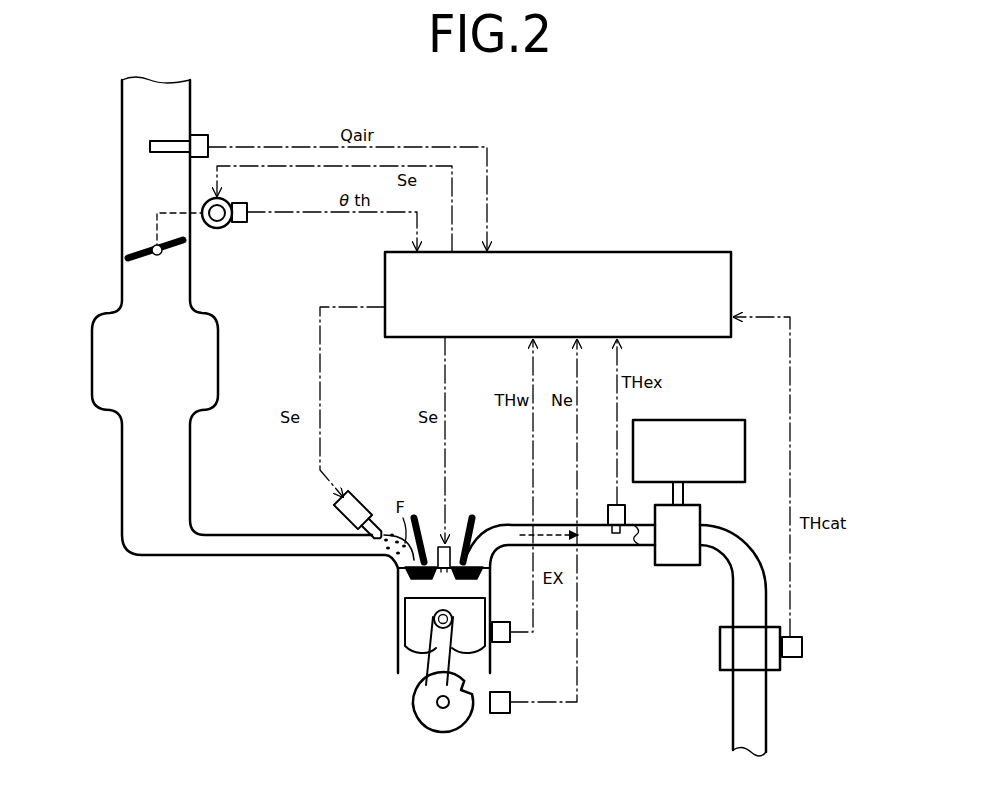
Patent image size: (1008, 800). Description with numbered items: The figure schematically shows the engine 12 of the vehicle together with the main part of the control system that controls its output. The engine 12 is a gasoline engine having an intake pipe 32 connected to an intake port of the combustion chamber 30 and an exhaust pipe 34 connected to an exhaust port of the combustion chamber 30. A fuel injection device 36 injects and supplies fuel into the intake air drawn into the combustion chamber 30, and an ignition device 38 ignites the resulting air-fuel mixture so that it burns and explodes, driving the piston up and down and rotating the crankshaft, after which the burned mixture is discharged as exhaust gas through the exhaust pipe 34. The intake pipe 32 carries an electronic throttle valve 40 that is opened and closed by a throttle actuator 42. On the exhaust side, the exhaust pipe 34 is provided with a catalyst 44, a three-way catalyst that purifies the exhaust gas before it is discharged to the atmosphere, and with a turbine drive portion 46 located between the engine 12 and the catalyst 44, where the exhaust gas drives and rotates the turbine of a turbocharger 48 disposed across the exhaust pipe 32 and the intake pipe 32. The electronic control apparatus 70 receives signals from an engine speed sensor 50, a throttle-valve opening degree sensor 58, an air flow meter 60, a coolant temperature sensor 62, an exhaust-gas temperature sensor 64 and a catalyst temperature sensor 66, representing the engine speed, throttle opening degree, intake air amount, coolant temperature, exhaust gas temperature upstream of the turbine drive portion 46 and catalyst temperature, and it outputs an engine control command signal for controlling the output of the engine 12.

The engine 12 is at (400, 450).
The combustion chamber 30 is at (398, 588).
The intake pipe 32 is at (275, 535).
The exhaust pipe 34 is at (512, 522).
The fuel injection device 36 is at (362, 500).
The ignition device 38 is at (452, 545).
The electronic throttle valve 40 is at (142, 252).
The throttle actuator 42 is at (227, 224).
The catalyst 44 is at (726, 645).
The turbine drive portion 46 is at (676, 558).
The turbocharger 48 is at (690, 421).
The engine speed sensor 50 is at (510, 712).
The throttle-valve opening degree sensor 58 is at (244, 203).
The air flow meter 60 is at (204, 135).
The coolant temperature sensor 62 is at (510, 640).
The exhaust-gas temperature sensor 64 is at (610, 512).
The catalyst temperature sensor 66 is at (790, 657).
The electronic control apparatus 70 is at (688, 252).